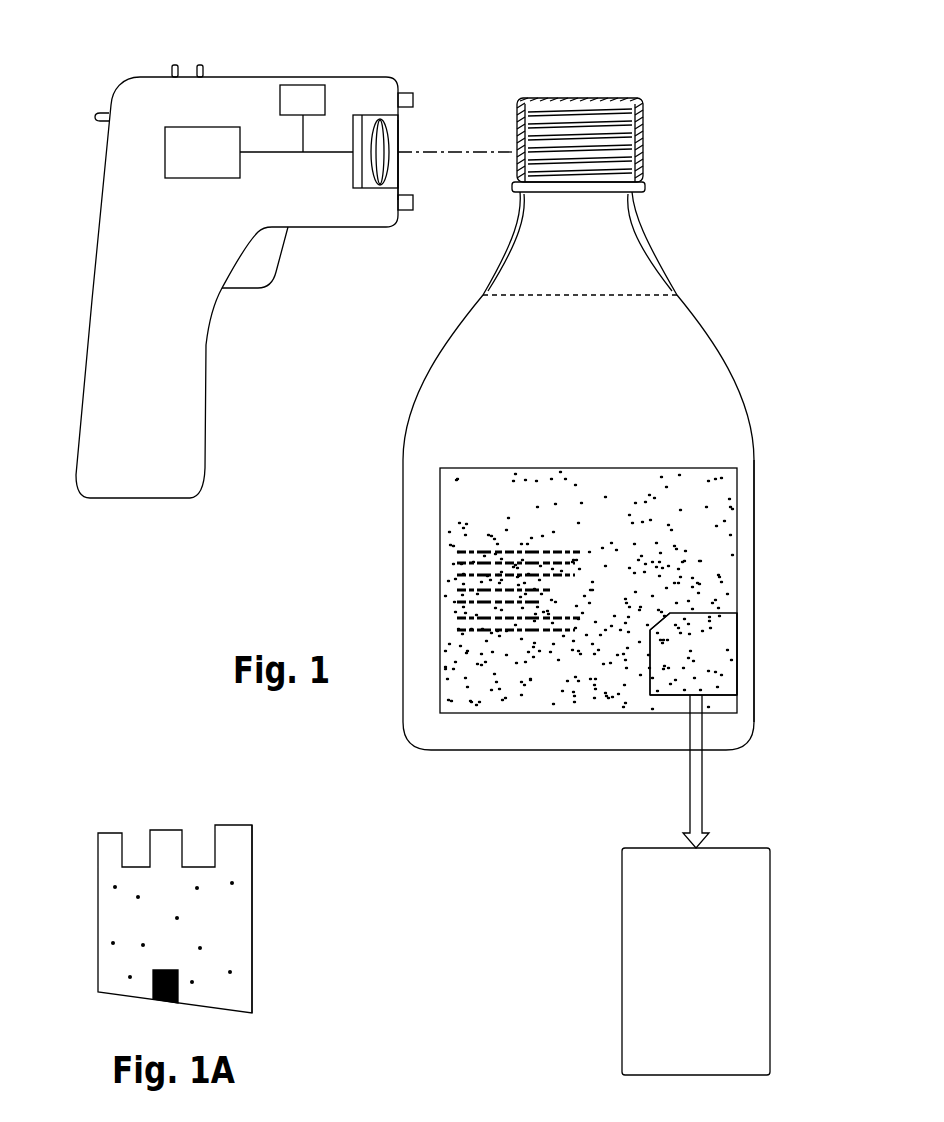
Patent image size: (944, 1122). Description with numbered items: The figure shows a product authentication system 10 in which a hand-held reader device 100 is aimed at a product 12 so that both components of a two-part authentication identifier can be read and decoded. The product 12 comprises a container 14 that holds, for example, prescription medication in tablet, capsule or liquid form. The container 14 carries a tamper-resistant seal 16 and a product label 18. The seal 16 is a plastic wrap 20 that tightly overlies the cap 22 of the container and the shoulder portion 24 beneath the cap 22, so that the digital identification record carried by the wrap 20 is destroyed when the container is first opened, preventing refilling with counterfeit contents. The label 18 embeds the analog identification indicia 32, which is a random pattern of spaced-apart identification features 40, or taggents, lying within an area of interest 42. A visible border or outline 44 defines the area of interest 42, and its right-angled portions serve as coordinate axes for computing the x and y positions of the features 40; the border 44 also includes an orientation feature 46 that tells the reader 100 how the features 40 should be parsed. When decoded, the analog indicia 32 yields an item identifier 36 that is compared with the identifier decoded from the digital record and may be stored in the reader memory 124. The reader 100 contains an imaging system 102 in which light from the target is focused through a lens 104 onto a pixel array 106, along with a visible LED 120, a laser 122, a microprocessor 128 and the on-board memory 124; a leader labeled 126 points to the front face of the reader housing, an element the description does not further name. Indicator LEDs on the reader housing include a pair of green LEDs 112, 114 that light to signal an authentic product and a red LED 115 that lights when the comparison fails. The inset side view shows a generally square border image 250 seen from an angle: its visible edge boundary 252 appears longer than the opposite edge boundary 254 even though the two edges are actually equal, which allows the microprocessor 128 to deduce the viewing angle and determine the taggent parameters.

In FIG. 1, the identification or authentication system 10 is at (710, 110).
In FIG. 1, the product 12 is at (390, 457).
In FIG. 1, the container 14 is at (732, 360).
In FIG. 1, the tamper-resistant seal 16 is at (640, 228).
In FIG. 1, the product label 18 is at (738, 488).
In FIG. 1, the plastic wrap 20 is at (657, 268).
In FIG. 1, the cap 22 is at (642, 138).
In FIG. 1, the shoulder portion 24 is at (542, 263).
In FIG. 1, the analog identification indicia 32 is at (660, 667).
In FIG. 1, the item identifier 36 is at (622, 888).
In FIG. 1, the identification features 40 is at (722, 677).
In FIG. 1, the area of interest 42 is at (700, 608).
In FIG. 1, the border or outline 44 is at (670, 695).
In FIG. 1, the orientation feature 46 is at (655, 625).
In FIG. 1, the reader device 100 is at (84, 268).
In FIG. 1, the imaging system 102 is at (356, 199).
In FIG. 1, the lens 104 is at (383, 190).
In FIG. 1, the pixel array 106 is at (353, 125).
In FIG. 1, the green LED 112 is at (178, 66).
In FIG. 1, the green LED 114 is at (203, 66).
In FIG. 1, the red LED 115 is at (100, 116).
In FIG. 1, the visible LED 120 is at (413, 94).
In FIG. 1, the laser 122 is at (405, 211).
In FIG. 1, the memory 124 is at (280, 103).
In FIG. 1, the front face 126 is at (399, 133).
In FIG. 1, the microprocessor 128 is at (210, 170).
In FIG. 1A, the square border image 250 is at (132, 1007).
In FIG. 1A, the visible edge boundary 252 is at (252, 917).
In FIG. 1A, the edge boundary 254 is at (98, 910).